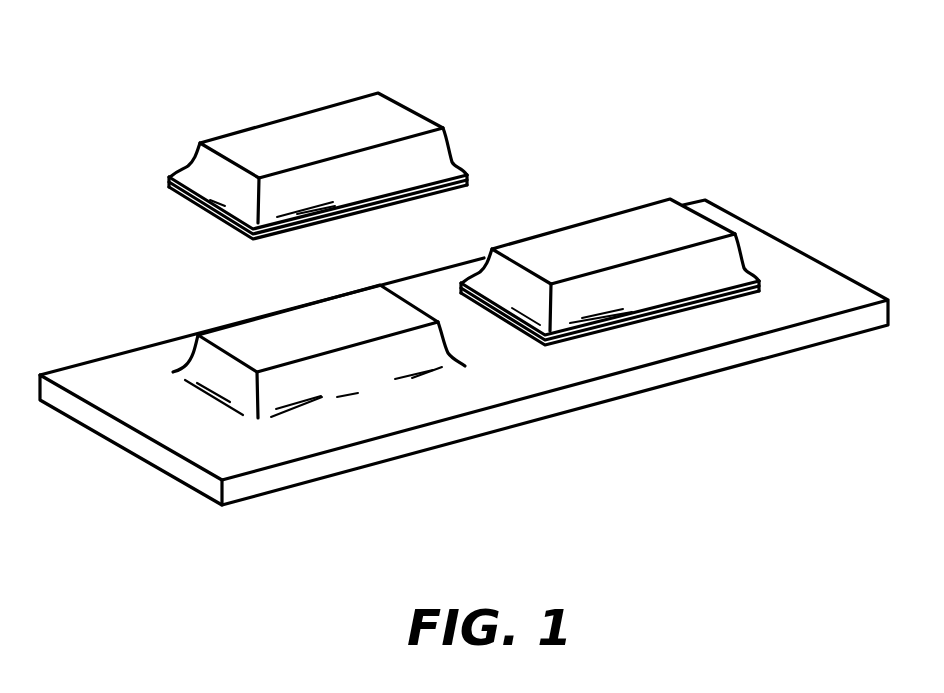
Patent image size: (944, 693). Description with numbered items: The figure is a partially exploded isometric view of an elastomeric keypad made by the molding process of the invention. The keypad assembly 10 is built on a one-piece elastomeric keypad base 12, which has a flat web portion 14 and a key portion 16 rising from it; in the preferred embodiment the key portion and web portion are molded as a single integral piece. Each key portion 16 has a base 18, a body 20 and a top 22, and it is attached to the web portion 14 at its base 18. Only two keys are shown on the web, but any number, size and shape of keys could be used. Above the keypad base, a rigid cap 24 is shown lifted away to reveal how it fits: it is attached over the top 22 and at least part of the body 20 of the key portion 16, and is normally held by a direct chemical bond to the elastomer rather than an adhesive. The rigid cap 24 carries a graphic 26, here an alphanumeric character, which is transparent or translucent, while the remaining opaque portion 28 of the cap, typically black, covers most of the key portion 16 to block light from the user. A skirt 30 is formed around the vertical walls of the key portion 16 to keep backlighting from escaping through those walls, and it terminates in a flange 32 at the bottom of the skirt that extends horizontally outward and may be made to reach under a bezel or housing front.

The keypad assembly 10 is at (752, 547).
The keypad base 12 is at (207, 497).
The web portion 14 is at (482, 335).
The key portion 16 is at (235, 318).
The base 18 is at (205, 393).
The body 20 is at (367, 368).
The top 22 is at (343, 323).
The rigid cap 24 is at (245, 113).
The graphic 26 is at (327, 122).
The opaque portion 28 is at (397, 115).
The skirt 30 is at (222, 178).
The flange 32 is at (195, 203).